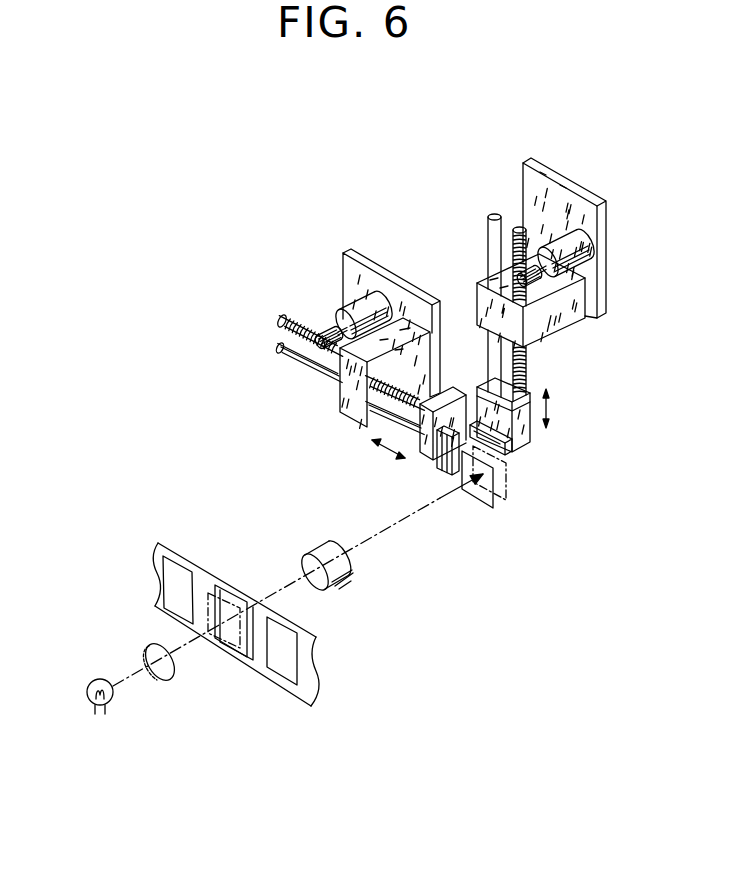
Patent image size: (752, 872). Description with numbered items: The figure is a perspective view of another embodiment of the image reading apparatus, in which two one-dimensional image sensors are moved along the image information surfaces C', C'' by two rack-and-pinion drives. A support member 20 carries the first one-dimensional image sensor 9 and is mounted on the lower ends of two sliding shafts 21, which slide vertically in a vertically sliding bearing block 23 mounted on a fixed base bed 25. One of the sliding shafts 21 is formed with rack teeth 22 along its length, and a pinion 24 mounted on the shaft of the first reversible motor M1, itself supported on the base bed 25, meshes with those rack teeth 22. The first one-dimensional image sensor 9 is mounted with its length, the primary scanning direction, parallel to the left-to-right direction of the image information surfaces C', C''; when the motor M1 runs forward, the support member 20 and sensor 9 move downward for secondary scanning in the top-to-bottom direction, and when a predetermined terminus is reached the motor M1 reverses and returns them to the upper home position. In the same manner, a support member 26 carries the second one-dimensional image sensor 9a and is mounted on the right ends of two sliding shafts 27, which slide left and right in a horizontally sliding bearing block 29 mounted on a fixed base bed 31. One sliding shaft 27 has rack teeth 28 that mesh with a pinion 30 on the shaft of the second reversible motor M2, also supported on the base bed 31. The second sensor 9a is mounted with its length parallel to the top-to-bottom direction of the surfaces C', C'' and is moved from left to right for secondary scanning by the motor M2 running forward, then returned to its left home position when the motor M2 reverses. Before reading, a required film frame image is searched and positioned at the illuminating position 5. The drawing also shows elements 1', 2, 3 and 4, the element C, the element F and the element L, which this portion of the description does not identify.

The light source unit 1' is at (157, 725).
The lamp 2 is at (87, 689).
The condenser lens 3 is at (148, 651).
The projection lens 4 is at (323, 546).
The illuminating position 5 is at (248, 586).
The first one-dimensional image sensor 9 is at (508, 447).
The second one-dimensional image sensor 9a is at (433, 462).
The support member 20 is at (524, 432).
The sliding shafts 21 is at (512, 251).
The rack teeth 22 is at (527, 368).
The vertically sliding bearing block 23 is at (544, 292).
The pinion 24 is at (540, 327).
The fixed base bed 25 is at (580, 193).
The support member 26 is at (424, 456).
The sliding shafts 27 is at (281, 349).
The rack teeth 28 is at (294, 322).
The horizontally sliding bearing block 29 is at (350, 410).
The pinion 30 is at (324, 335).
The fixed base bed 31 is at (398, 284).
The first reversible motor M1 is at (580, 246).
The second reversible motor M2 is at (363, 303).
The film frames C is at (230, 616).
The image information surface C' is at (477, 506).
The image information surface C'' is at (520, 482).
The film F is at (312, 648).
The optical axis L is at (372, 548).